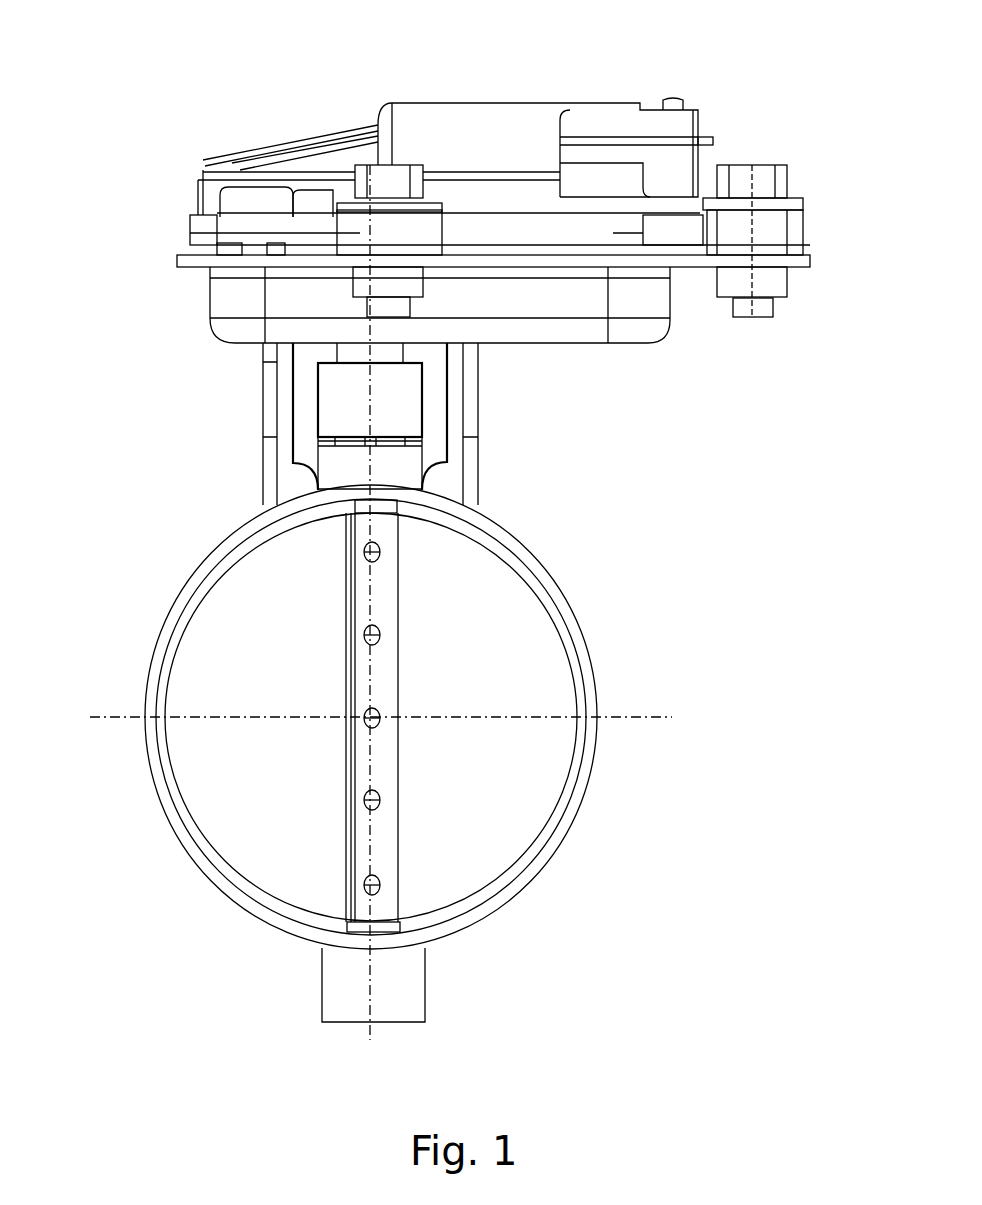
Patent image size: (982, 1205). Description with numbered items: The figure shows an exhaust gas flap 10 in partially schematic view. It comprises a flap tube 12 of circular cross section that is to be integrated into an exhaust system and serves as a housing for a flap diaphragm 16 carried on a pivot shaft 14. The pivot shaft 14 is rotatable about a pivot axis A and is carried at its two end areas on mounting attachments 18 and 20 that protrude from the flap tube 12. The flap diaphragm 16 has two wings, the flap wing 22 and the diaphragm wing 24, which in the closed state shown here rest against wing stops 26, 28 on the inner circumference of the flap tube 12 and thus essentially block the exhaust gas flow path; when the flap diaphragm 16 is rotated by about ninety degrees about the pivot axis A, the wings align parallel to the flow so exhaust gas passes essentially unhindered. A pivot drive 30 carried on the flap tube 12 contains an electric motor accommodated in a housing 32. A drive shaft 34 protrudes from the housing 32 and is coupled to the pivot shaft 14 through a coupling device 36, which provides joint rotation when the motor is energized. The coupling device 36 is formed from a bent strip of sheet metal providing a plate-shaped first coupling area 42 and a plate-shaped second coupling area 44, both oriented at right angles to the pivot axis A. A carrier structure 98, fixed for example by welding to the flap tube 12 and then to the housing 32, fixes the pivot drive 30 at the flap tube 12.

The exhaust gas flap 10 is at (653, 945).
The flap tube 12 is at (580, 623).
The pivot shaft 14 is at (380, 932).
The flap diaphragm 16 is at (270, 850).
The mounting attachment 18 is at (392, 475).
The mounting attachment 20 is at (357, 986).
The flap wing 22 is at (207, 767).
The diaphragm wing 24 is at (532, 790).
The wing stop 26 is at (200, 597).
The wing stop 28 is at (580, 700).
The pivot drive 30 is at (481, 100).
The housing 32 is at (653, 343).
The drive shaft 34 is at (393, 353).
The coupling device 36 is at (245, 414).
The first coupling area 42 is at (358, 363).
The second coupling area 44 is at (343, 443).
The carrier structure 98 is at (478, 415).
The pivot axis A is at (372, 590).